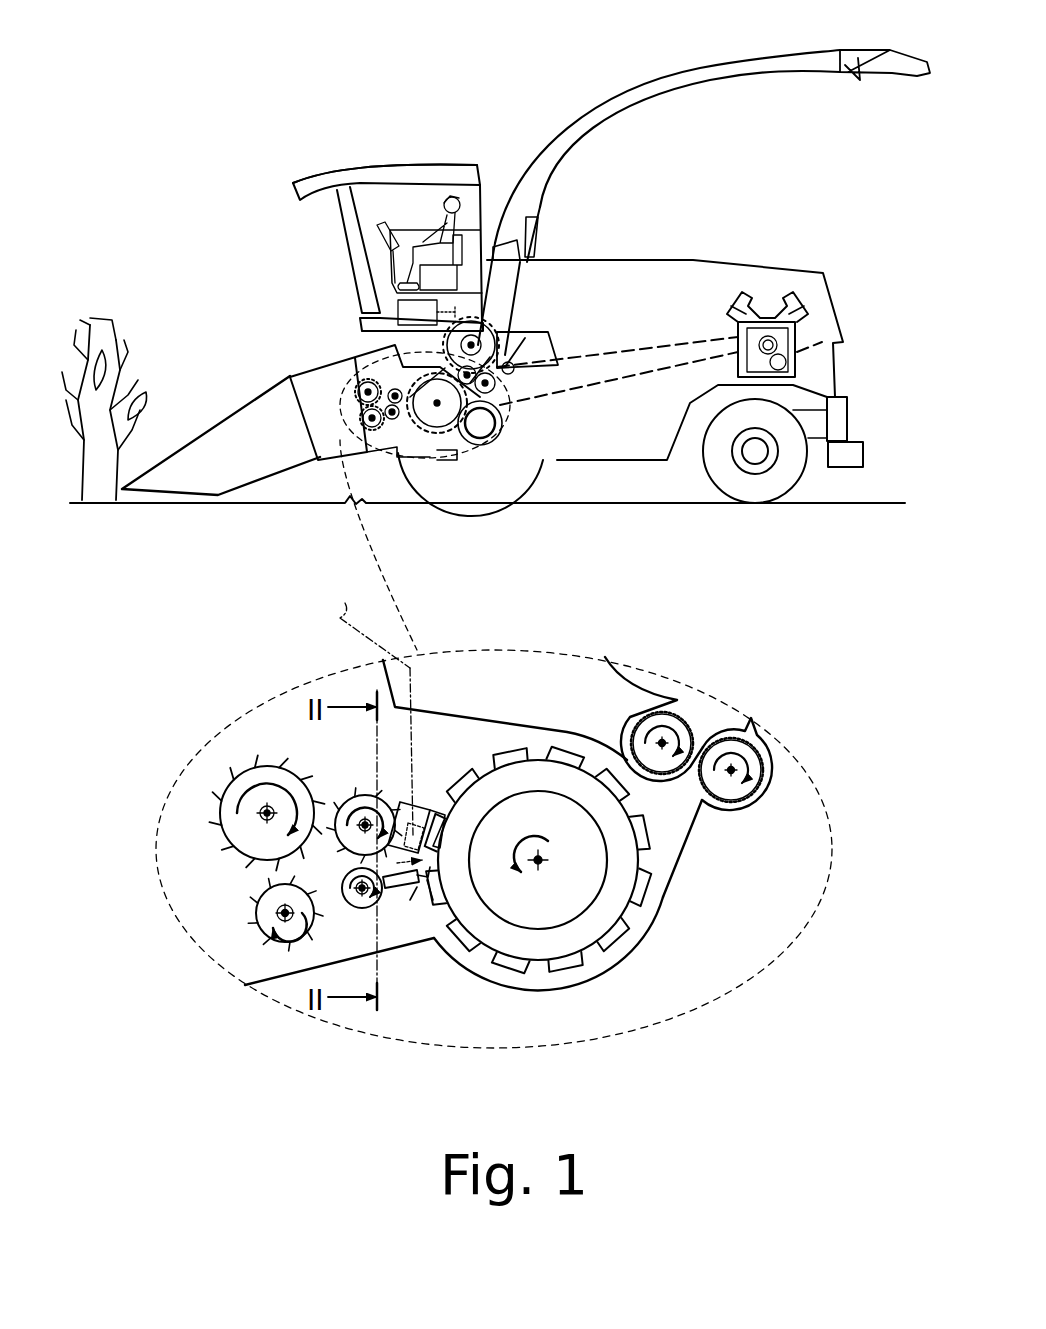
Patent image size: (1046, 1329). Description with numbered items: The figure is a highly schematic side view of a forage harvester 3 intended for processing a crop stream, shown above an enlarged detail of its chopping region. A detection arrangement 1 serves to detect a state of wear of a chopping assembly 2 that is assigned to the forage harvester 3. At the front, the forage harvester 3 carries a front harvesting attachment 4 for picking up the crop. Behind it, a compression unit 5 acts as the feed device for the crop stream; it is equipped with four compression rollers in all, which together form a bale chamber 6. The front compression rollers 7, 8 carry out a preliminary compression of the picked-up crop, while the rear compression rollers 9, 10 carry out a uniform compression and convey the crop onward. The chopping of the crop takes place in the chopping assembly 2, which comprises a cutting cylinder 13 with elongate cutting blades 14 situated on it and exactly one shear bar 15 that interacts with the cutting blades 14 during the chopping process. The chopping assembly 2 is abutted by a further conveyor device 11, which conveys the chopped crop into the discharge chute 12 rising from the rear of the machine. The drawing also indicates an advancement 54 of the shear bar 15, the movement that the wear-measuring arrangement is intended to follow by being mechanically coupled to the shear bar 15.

The detection arrangement 1 is at (318, 338).
The chopping assembly 2 is at (505, 705).
The forage harvester 3 is at (268, 90).
The front harvesting attachment 4 is at (255, 437).
The compression unit 5 is at (367, 927).
The bale chamber 6 is at (200, 903).
The front compression roller 7 is at (257, 923).
The front compression roller 8 is at (240, 785).
The rear compression roller 9 is at (407, 893).
The rear compression roller 10 is at (358, 790).
The further conveyor device 11 is at (508, 323).
The discharge chute 12 is at (493, 285).
The cutting cylinder 13 is at (625, 875).
The cutting blades 14 is at (580, 737).
The shear bar 15 is at (402, 880).
The advancement of the shear bar 54 is at (435, 860).